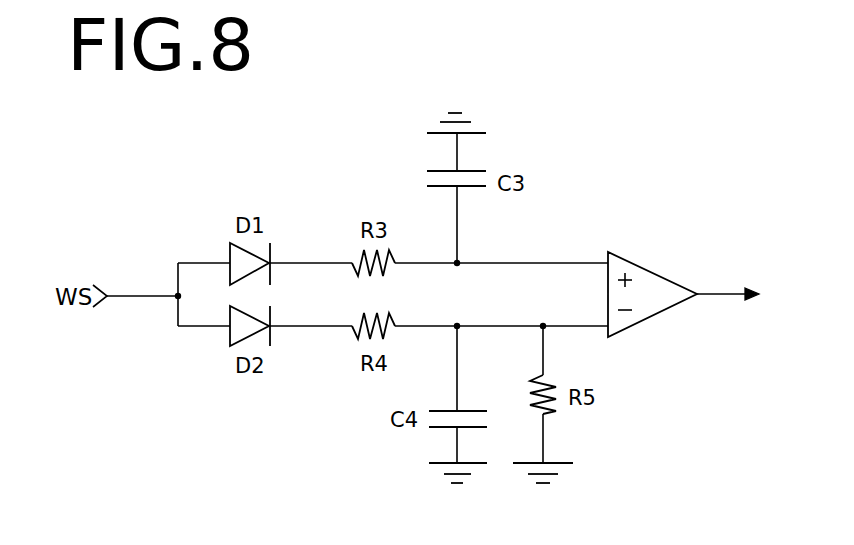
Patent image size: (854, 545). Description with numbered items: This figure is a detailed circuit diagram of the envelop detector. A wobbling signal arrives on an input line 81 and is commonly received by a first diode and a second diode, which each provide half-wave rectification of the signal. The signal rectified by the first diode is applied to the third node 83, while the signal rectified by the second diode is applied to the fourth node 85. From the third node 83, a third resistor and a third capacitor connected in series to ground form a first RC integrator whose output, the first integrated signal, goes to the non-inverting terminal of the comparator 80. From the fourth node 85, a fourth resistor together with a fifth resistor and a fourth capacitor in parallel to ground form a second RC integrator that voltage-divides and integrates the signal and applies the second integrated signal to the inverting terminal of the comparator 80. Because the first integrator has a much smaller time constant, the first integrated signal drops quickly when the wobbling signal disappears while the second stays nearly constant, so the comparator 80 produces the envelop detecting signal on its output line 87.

The comparator 80 is at (679, 266).
The input line 81 is at (147, 287).
The third node 83 is at (332, 258).
The fourth node 85 is at (315, 320).
The output signal line 87 is at (735, 288).